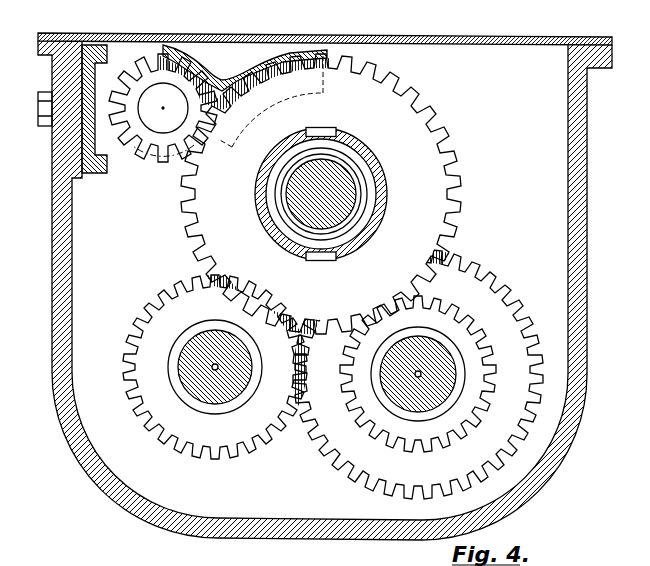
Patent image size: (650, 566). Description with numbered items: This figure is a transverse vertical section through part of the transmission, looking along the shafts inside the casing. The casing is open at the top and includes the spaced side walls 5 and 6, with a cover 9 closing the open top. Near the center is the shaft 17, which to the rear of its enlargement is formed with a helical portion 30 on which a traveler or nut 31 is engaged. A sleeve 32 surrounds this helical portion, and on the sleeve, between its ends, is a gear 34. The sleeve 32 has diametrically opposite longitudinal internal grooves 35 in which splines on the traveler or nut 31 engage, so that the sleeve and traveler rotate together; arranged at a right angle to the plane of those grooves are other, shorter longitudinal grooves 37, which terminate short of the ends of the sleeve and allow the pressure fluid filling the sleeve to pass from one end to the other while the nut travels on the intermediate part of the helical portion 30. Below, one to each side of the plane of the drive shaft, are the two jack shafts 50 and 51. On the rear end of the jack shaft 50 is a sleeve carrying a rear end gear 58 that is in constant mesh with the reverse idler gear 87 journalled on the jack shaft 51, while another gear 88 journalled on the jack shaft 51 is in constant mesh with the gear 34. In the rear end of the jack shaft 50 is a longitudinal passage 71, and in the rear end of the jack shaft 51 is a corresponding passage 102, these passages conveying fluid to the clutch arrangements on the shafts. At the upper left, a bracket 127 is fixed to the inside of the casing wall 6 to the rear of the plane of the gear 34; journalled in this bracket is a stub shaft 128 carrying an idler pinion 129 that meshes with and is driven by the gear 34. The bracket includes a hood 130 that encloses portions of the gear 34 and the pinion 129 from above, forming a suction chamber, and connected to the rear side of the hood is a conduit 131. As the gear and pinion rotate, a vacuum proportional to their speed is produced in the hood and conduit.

The side wall 5 is at (589, 268).
The side wall 6 is at (70, 270).
The cover 9 is at (474, 45).
The shaft 17 is at (340, 210).
The helical portion 30 is at (355, 205).
The traveler or nut 31 is at (357, 173).
The sleeve 32 is at (353, 237).
The gear 34 is at (427, 202).
The internal grooves 35 is at (324, 133).
The longitudinal grooves 37 is at (262, 192).
The jack shaft 50 is at (445, 381).
The jack shaft 51 is at (188, 366).
The rear end gear 58 is at (522, 390).
The longitudinal passage 71 is at (416, 376).
The reverse idler gear 87 is at (140, 408).
The gear 88 is at (180, 412).
The passage 102 is at (213, 369).
The bracket 127 is at (105, 138).
The stub shaft 128 is at (153, 118).
The idler pinion 129 is at (158, 153).
The hood 130 is at (224, 84).
The conduit 131 is at (13, 559).